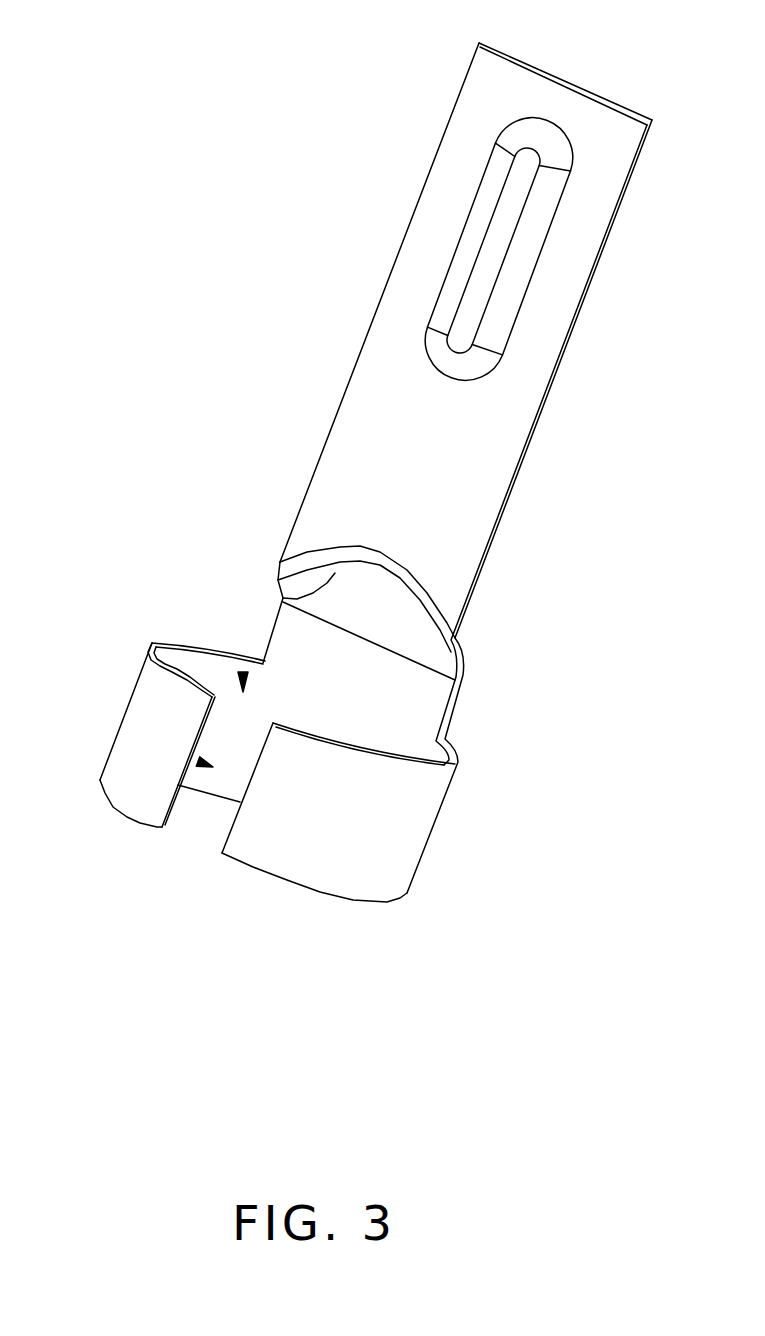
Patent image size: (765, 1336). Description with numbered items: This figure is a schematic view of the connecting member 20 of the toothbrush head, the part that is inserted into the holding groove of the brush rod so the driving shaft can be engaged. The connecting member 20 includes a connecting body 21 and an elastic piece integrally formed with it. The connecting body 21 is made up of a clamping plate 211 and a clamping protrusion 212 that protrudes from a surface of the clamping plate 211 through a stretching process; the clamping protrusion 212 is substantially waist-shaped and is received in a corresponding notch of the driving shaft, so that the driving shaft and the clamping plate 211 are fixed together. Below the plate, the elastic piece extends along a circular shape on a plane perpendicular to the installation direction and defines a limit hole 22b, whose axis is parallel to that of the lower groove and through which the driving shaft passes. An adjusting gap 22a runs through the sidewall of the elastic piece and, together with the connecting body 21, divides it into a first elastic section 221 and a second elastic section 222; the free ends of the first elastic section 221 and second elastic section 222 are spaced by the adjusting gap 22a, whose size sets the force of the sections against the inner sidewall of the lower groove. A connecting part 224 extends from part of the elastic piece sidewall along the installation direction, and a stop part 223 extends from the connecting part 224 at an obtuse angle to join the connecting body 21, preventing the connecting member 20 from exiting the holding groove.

The connecting member 20 is at (287, 39).
The connecting body 21 is at (310, 177).
The clamping plate 211 is at (407, 287).
The clamping protrusion 212 is at (492, 240).
The first elastic section 221 is at (385, 820).
The second elastic section 222 is at (223, 730).
The stop part 223 is at (283, 598).
The connecting part 224 is at (420, 693).
The adjusting gap 22a is at (198, 761).
The limit hole 22b is at (243, 672).